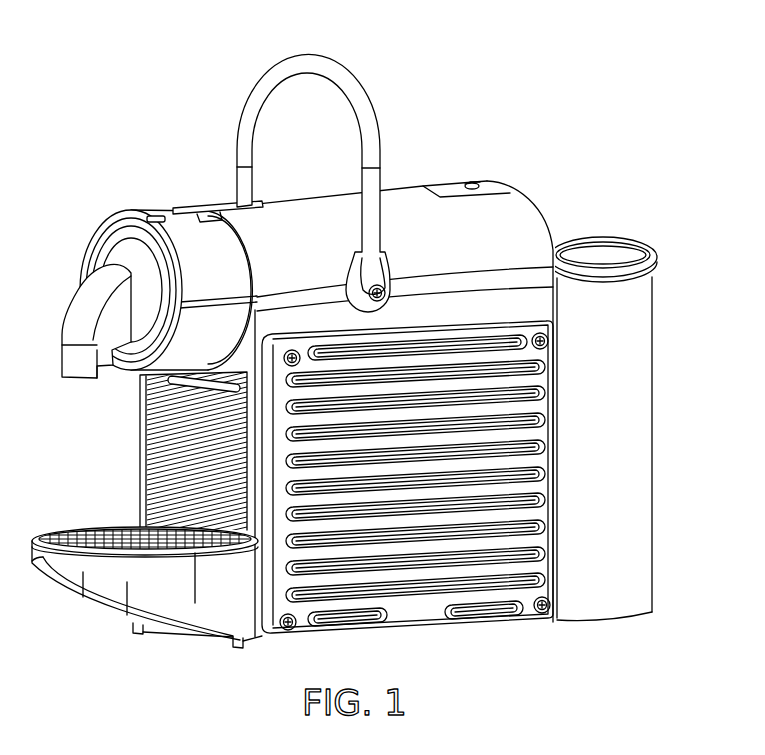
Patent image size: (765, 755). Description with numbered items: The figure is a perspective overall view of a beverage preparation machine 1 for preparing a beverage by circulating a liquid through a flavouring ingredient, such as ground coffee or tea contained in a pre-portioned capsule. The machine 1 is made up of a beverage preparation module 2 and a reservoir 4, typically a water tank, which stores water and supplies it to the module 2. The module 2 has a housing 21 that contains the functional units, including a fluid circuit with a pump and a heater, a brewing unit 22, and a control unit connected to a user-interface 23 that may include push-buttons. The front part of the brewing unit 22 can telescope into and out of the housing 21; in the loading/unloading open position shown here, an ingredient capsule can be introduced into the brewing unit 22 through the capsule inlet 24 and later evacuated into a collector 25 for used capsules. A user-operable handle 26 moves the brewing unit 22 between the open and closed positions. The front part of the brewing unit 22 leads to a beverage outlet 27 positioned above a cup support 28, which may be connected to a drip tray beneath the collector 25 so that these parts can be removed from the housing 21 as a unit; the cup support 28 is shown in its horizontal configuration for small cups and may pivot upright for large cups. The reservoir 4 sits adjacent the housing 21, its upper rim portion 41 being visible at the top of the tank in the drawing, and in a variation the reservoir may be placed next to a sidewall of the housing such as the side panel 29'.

The beverage preparation machine 1 is at (84, 139).
The beverage preparation module 2 is at (398, 187).
The reservoir 4 is at (650, 334).
The housing 21 is at (531, 201).
The brewing unit 22 is at (151, 216).
The user-interface 23 is at (470, 181).
The capsule inlet 24 is at (224, 206).
The collector 25 is at (150, 437).
The handle 26 is at (310, 57).
The beverage outlet 27 is at (67, 323).
The cup support 28 is at (50, 532).
The side panel 29' is at (412, 491).
The water tank rim / opening 41 is at (608, 238).